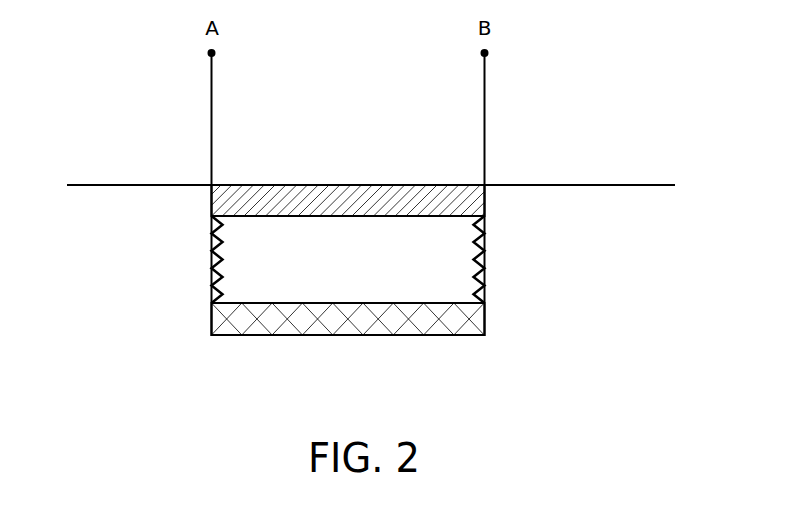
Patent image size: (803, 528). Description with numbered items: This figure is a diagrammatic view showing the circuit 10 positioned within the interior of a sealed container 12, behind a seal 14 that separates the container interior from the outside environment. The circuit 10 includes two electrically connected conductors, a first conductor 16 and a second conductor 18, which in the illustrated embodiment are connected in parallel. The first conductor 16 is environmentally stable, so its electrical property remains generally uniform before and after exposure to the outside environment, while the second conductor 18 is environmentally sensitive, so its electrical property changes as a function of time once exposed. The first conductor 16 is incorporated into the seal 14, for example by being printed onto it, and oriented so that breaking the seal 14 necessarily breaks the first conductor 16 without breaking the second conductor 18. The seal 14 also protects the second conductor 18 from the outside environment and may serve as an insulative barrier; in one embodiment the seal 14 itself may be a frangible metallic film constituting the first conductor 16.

The circuit 10 is at (487, 267).
The sealed container 12 is at (585, 185).
The seal 14 is at (102, 185).
The first conductor 16 is at (378, 193).
The second conductor 18 is at (340, 328).